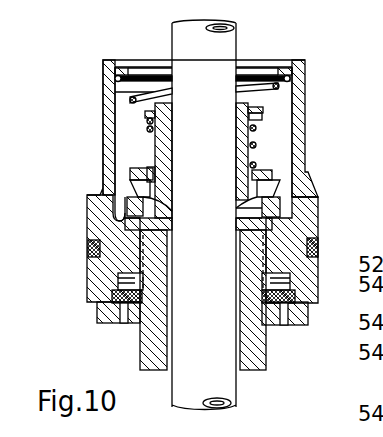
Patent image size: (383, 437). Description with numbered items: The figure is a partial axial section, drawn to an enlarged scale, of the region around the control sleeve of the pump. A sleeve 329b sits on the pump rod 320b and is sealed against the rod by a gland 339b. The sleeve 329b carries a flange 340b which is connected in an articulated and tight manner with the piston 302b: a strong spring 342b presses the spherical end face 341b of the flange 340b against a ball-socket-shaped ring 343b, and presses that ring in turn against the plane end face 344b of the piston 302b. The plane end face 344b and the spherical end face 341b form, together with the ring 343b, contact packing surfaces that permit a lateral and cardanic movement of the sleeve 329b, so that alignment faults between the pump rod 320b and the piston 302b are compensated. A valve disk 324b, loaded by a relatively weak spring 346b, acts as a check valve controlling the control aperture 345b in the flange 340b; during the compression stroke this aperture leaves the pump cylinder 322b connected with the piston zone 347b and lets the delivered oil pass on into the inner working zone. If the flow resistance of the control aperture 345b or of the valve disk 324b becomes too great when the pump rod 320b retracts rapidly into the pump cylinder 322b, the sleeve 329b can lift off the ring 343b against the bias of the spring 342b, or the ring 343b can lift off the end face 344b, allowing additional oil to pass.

The pump rod 320b is at (225, 45).
The piston zone 347b is at (122, 93).
The strong spring 342b is at (293, 77).
The gland 339b is at (147, 128).
The relatively weak spring 346b is at (257, 143).
The sleeve 329b is at (240, 160).
The flange 340b is at (143, 182).
The control aperture 345b is at (148, 193).
The valve disk 324b is at (272, 173).
The spherical end face 341b is at (273, 190).
The ball-socket-shaped ring 343b is at (282, 205).
The piston 302b is at (102, 285).
The plane end face 344b is at (140, 223).
The pump cylinder 322b is at (240, 337).